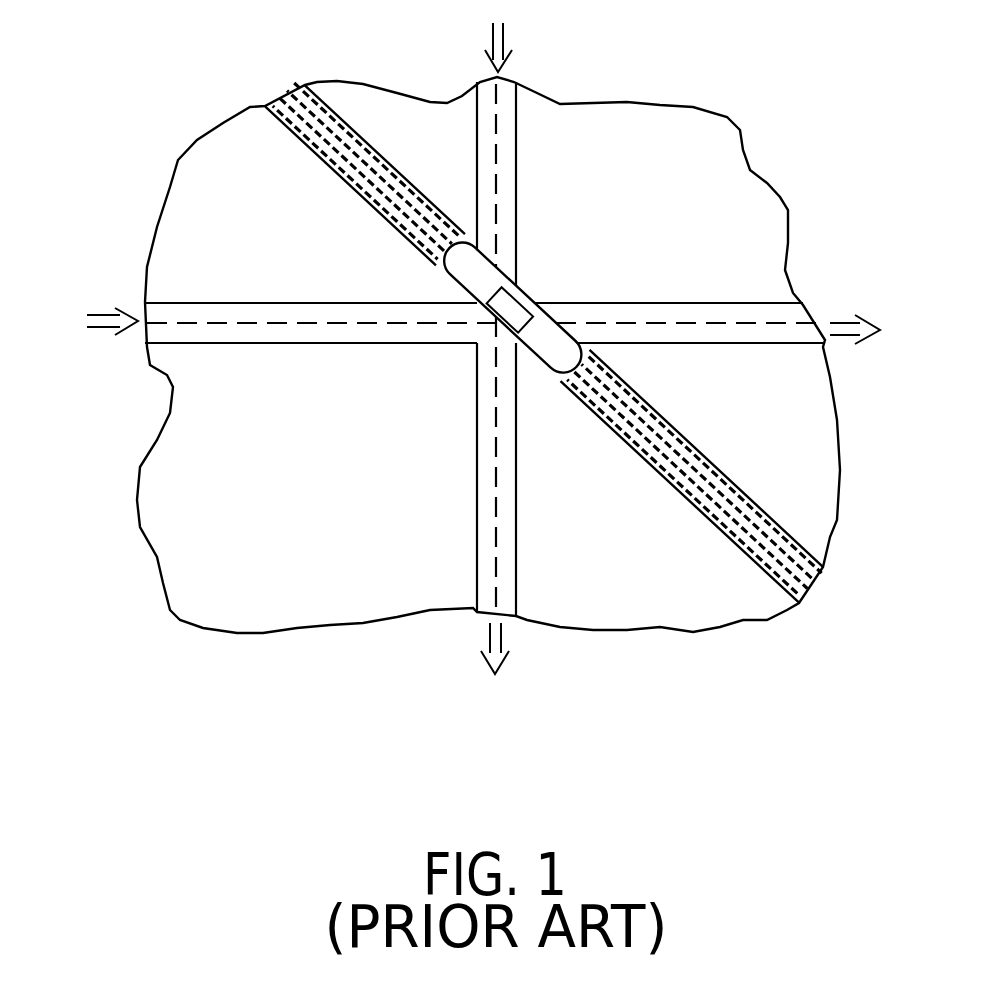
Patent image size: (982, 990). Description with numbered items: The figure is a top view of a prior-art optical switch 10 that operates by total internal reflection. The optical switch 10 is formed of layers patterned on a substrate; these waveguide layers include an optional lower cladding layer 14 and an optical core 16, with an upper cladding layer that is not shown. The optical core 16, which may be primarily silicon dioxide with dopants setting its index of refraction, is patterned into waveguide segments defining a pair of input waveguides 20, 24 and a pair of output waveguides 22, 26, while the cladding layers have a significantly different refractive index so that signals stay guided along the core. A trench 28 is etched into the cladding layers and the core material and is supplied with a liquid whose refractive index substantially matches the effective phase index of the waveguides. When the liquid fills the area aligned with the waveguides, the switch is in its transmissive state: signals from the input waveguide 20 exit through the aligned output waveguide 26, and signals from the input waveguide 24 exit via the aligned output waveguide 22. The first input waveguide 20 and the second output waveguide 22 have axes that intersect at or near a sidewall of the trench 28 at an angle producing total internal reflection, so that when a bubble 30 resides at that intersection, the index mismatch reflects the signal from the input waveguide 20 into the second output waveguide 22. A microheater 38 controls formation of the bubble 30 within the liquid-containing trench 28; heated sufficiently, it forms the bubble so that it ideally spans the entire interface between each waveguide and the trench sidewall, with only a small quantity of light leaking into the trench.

The optical switch 10 is at (139, 180).
The lower cladding layer 14 is at (160, 540).
The optical core 16 is at (201, 343).
The first input waveguide 20 is at (263, 303).
The second output waveguide 22 is at (476, 397).
The second input waveguide 24 is at (507, 170).
The first output waveguide 26 is at (643, 305).
The trench 28 is at (400, 231).
The bubble 30 is at (548, 376).
The microheater 38 is at (508, 297).